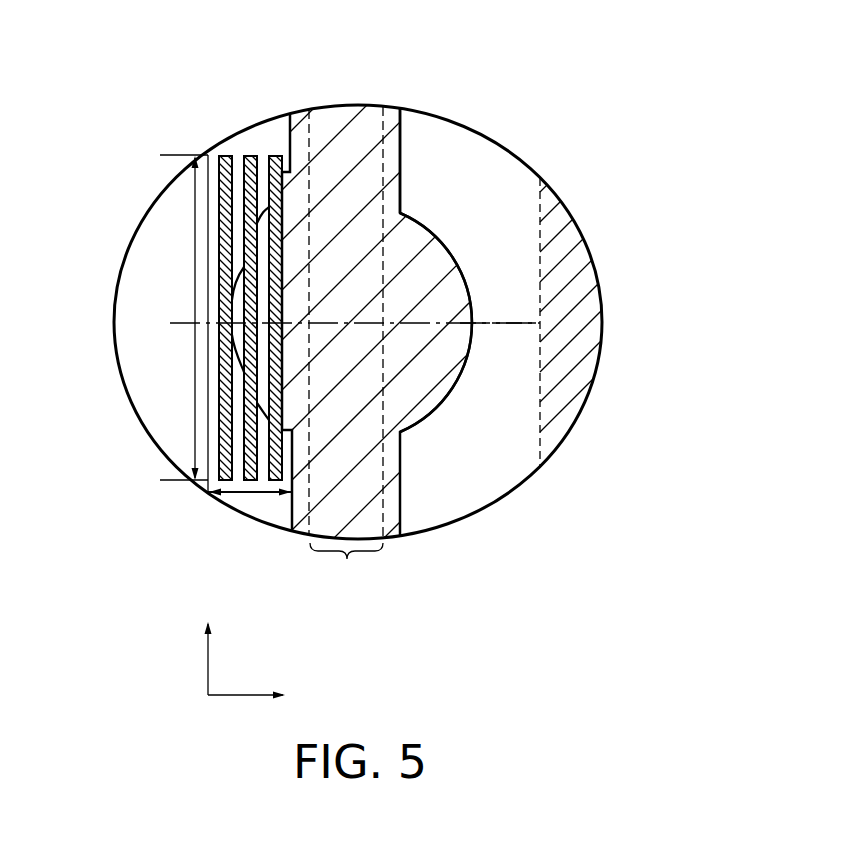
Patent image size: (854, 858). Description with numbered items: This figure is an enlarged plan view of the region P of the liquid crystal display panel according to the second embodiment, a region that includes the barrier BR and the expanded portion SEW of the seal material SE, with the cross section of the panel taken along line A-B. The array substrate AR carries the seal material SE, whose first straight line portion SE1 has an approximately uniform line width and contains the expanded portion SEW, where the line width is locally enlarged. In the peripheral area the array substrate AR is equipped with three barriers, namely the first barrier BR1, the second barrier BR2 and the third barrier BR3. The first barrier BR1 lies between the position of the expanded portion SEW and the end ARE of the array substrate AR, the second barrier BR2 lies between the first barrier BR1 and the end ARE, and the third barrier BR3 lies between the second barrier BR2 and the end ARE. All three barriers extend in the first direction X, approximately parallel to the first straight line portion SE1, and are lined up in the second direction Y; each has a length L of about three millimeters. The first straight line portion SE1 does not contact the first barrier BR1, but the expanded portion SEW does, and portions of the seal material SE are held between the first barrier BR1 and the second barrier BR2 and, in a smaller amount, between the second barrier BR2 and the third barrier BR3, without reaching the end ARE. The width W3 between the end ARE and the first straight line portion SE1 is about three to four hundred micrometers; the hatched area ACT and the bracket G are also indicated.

The barrier BR is at (250, 273).
The first barrier BR1 is at (300, 264).
The second barrier BR2 is at (252, 155).
The third barrier BR3 is at (227, 155).
The seal material SE is at (350, 113).
The first straight line portion SE1 is at (402, 137).
The expanded portion SEW is at (455, 287).
The active area ACT is at (603, 359).
The line A-B A is at (346, 310).
The line A- B is at (500, 310).
The end of array substrate ARE is at (208, 392).
The array substrate AR is at (261, 507).
The region P is at (143, 432).
The length L is at (195, 178).
The width W3 is at (247, 495).
The gap G is at (346, 570).
The first direction X is at (207, 643).
The second direction Y is at (256, 694).